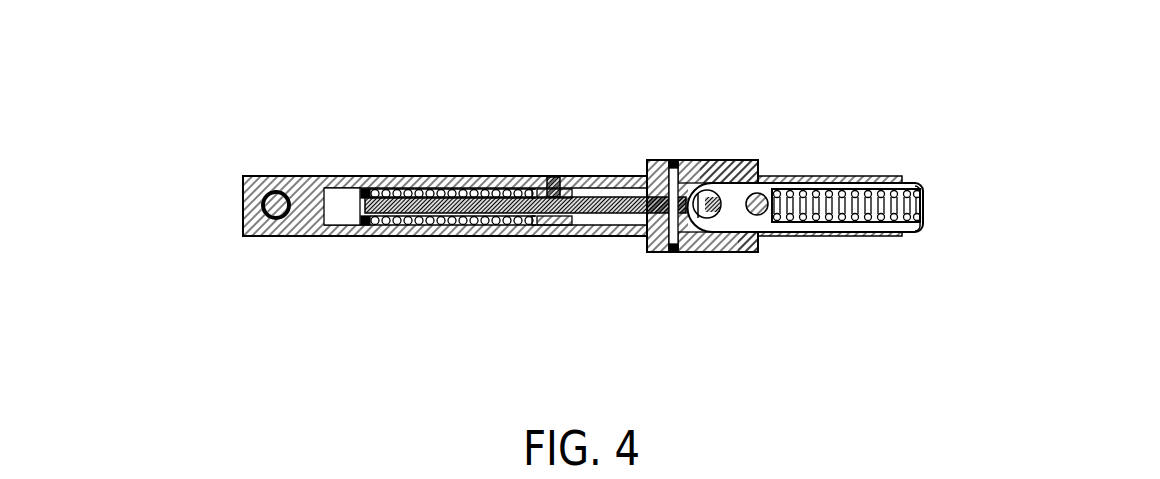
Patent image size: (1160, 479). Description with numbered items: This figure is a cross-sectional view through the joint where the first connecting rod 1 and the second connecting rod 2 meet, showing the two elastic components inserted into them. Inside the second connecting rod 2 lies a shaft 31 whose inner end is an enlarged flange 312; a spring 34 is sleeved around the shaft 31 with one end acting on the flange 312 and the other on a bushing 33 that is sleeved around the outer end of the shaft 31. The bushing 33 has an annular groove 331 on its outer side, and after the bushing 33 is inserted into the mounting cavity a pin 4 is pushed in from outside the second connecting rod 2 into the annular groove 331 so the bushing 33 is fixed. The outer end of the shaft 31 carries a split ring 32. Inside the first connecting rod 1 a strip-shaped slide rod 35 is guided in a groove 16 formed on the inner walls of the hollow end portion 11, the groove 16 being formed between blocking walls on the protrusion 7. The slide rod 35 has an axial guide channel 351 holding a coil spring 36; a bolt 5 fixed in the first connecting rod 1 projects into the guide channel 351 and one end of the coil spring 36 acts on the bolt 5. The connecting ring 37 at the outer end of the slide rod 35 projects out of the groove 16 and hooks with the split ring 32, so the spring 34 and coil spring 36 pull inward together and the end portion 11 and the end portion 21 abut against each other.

The first connecting rod 1 is at (817, 176).
The second connecting rod 2 is at (435, 176).
The pin 4 is at (555, 177).
The bolt 5 is at (783, 237).
The protrusion 7 is at (681, 252).
The end portion 11 is at (758, 162).
The groove 16 is at (698, 175).
The end portion 21 is at (683, 162).
The shaft 31 is at (484, 178).
The split ring 32 is at (728, 252).
The bushing 33 is at (581, 226).
The spring 34 is at (457, 224).
The slide rod 35 is at (923, 191).
The coil spring 36 is at (873, 237).
The connecting ring 37 is at (735, 183).
The flange 312 is at (385, 222).
The annular groove 331 is at (548, 225).
The guide channel 351 is at (915, 232).